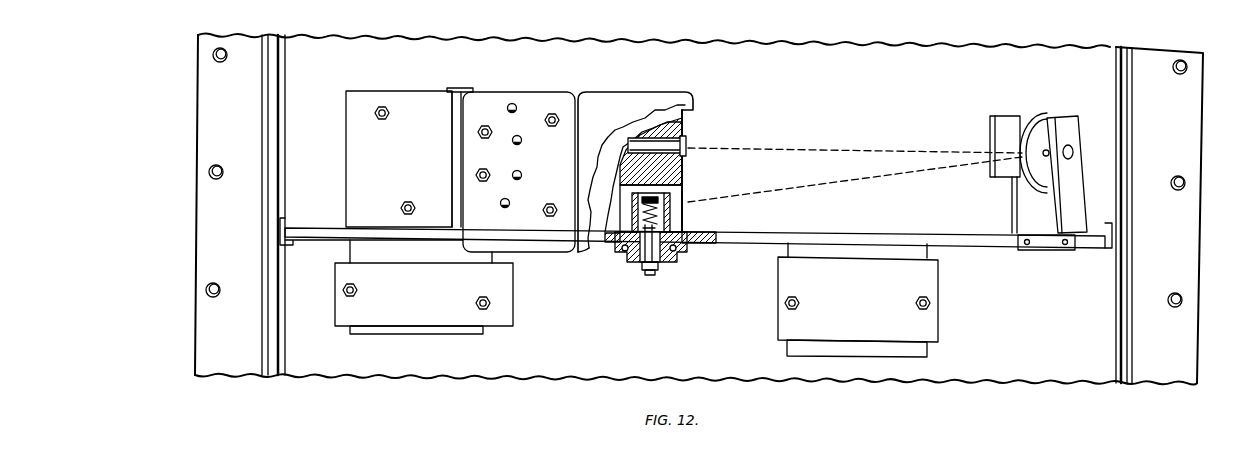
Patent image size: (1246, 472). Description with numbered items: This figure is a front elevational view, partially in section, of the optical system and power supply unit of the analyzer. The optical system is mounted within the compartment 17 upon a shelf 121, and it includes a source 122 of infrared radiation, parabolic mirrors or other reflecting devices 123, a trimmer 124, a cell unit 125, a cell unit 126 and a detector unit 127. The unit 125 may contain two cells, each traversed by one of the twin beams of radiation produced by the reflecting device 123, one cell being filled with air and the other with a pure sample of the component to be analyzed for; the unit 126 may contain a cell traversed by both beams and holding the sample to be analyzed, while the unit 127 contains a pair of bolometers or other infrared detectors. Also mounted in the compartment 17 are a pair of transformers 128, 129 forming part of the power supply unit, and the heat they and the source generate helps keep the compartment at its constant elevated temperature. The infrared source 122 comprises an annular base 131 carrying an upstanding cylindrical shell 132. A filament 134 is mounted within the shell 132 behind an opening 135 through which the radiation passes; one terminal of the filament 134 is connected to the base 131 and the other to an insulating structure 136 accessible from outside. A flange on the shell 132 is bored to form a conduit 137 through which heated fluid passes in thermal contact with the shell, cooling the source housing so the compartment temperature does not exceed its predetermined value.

The compartment 17 is at (1180, 106).
The shelf 121 is at (963, 241).
The source of infrared radiation 122 is at (664, 274).
The reflecting device 123 is at (1062, 122).
The trimmer 124 is at (990, 118).
The cell unit 125 is at (634, 80).
The cell unit 126 is at (512, 95).
The detector unit 127 is at (398, 103).
The transformer 128 is at (505, 297).
The transformer 129 is at (928, 291).
The annular base 131 is at (663, 258).
The cylindrical shell 132 is at (670, 222).
The filament 134 is at (662, 199).
The opening 135 is at (658, 211).
The insulating structure 136 is at (640, 268).
The conduit 137 is at (623, 253).